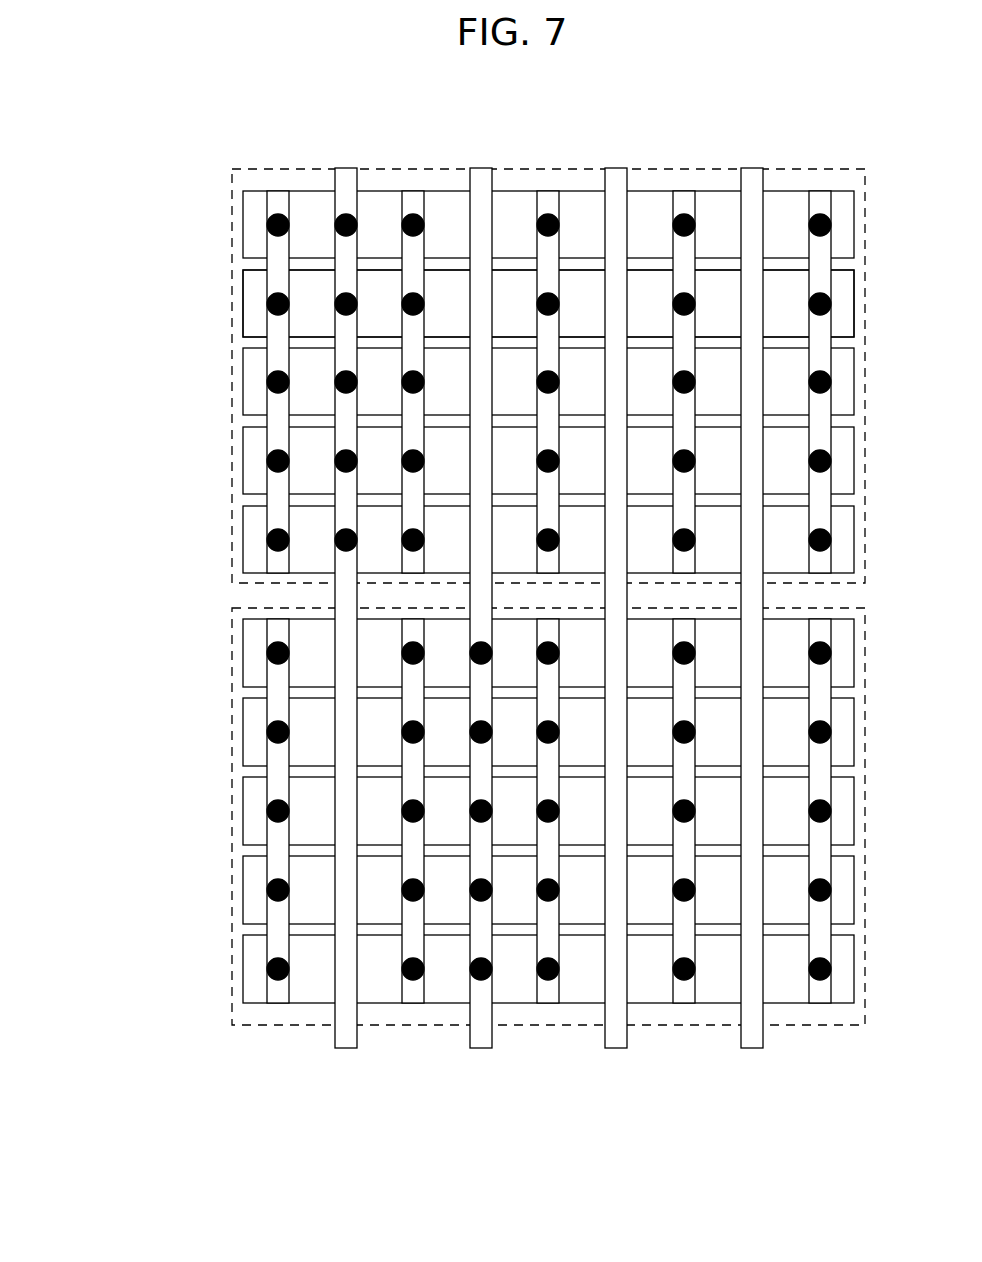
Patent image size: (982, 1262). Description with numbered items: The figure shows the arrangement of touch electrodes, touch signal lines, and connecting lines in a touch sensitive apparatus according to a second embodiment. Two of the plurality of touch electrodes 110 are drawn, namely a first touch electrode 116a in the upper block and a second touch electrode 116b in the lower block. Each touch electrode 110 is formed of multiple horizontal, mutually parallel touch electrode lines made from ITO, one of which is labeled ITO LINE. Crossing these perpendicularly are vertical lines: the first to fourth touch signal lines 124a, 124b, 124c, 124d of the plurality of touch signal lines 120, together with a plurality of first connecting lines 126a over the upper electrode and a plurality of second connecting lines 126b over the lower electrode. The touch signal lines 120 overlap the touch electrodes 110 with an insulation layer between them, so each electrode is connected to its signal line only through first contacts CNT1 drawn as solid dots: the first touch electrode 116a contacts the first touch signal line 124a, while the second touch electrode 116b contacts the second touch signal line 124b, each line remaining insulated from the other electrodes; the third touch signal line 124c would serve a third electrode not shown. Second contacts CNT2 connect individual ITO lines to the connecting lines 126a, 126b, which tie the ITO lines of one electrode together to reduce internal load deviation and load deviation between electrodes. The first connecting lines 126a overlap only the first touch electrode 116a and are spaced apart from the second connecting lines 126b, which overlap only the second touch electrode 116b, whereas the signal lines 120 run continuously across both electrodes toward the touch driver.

The touch electrodes 110 is at (112, 460).
The first touch electrode 116a is at (233, 465).
The second touch electrode 116b is at (233, 665).
The touch signal lines 120 is at (265, 1125).
The first touch signal line 124a is at (346, 1048).
The second touch signal line 124b is at (481, 1048).
The third touch signal line 124c is at (616, 1048).
The fourth touch signal line 124d is at (752, 1048).
The first connecting lines 126a is at (278, 190).
The second connecting lines 126b is at (278, 1004).
The first contact CNT1 is at (346, 214).
The second contact CNT2 is at (267, 225).
The ITO line ITO LINE is at (243, 312).